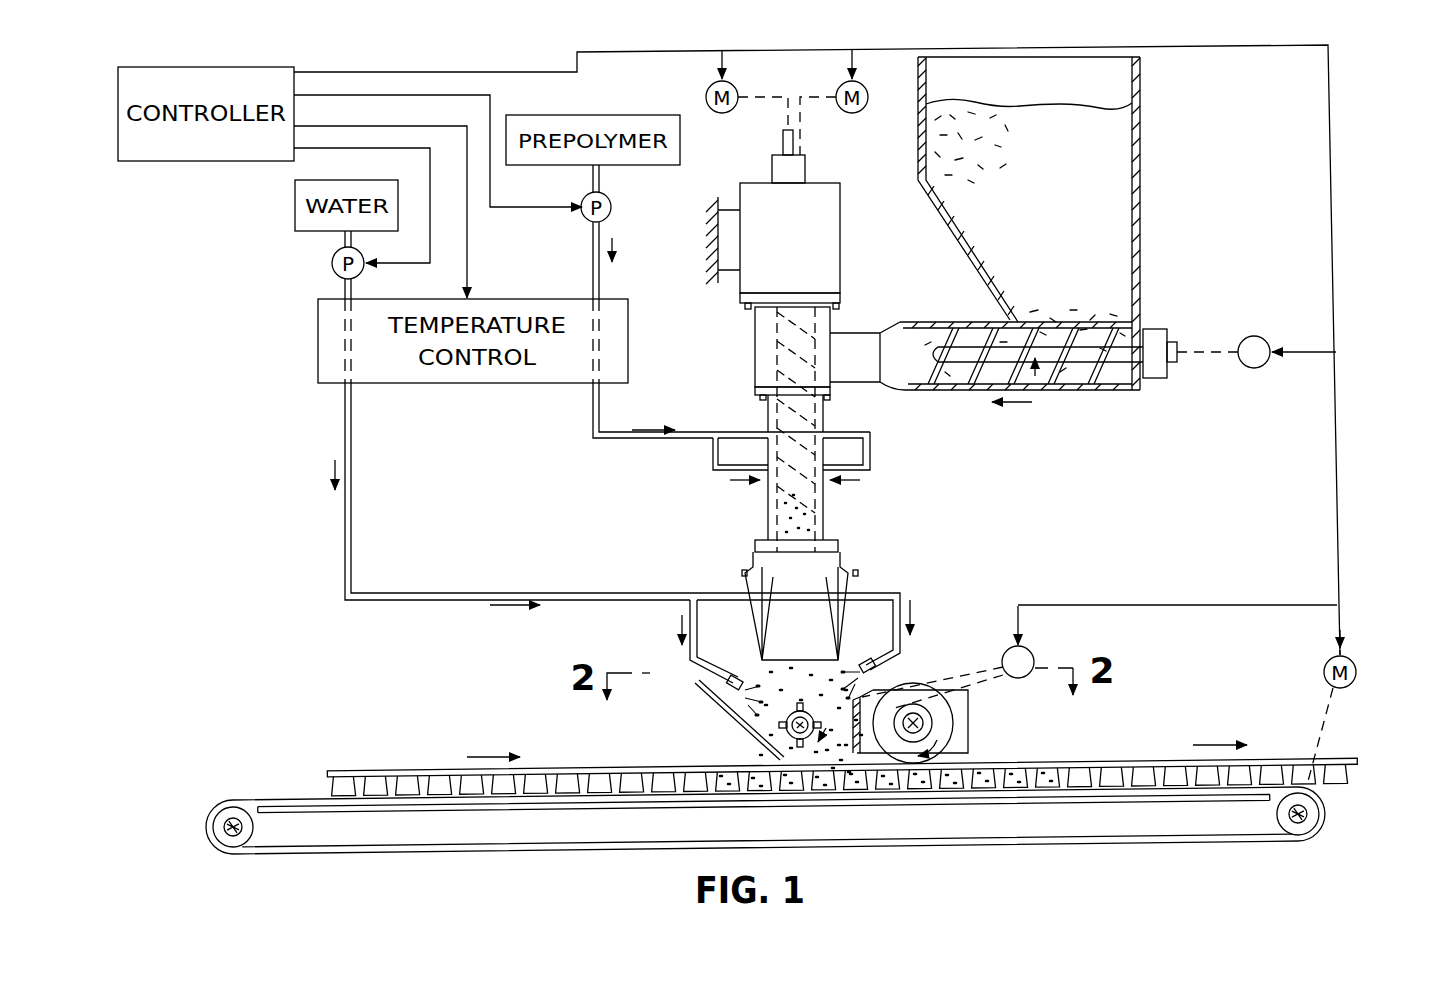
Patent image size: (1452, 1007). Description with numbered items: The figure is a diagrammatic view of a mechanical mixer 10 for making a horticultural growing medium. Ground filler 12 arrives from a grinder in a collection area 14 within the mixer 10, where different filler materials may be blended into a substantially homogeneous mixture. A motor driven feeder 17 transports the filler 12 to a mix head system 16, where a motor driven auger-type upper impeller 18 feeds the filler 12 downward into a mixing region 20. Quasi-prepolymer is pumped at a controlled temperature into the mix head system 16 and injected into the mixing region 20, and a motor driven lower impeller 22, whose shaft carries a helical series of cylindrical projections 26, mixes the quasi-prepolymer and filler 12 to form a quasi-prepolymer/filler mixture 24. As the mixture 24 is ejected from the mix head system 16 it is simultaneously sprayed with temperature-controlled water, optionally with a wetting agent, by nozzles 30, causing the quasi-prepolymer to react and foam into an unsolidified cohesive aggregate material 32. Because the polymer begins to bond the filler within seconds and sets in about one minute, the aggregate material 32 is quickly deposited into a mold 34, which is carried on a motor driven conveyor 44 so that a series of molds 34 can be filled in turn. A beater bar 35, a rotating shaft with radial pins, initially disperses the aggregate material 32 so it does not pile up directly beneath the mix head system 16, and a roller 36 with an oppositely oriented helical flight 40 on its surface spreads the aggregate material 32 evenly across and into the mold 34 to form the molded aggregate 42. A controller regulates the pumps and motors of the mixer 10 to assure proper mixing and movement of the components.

The mechanical mixer 10 is at (1372, 102).
The ground filler 12 is at (1113, 157).
The collection area 14 is at (1140, 207).
The mix head system 16 is at (748, 355).
The motor driven feeder 17 is at (1100, 378).
The upper impeller 18 is at (777, 368).
The mixing region 20 is at (808, 465).
The lower impeller 22 is at (822, 510).
The quasi-prepolymer/filler mixture 24 is at (800, 673).
The cylindrical projections 26 is at (780, 500).
The nozzles 30 is at (870, 665).
The aggregate material 32 is at (833, 745).
The mold 34 is at (445, 783).
The beater bar 35 is at (788, 737).
The roller 36 is at (956, 718).
The helical flight 40 is at (952, 740).
The molded aggregate 42 is at (997, 783).
The motor driven conveyor 44 is at (298, 797).